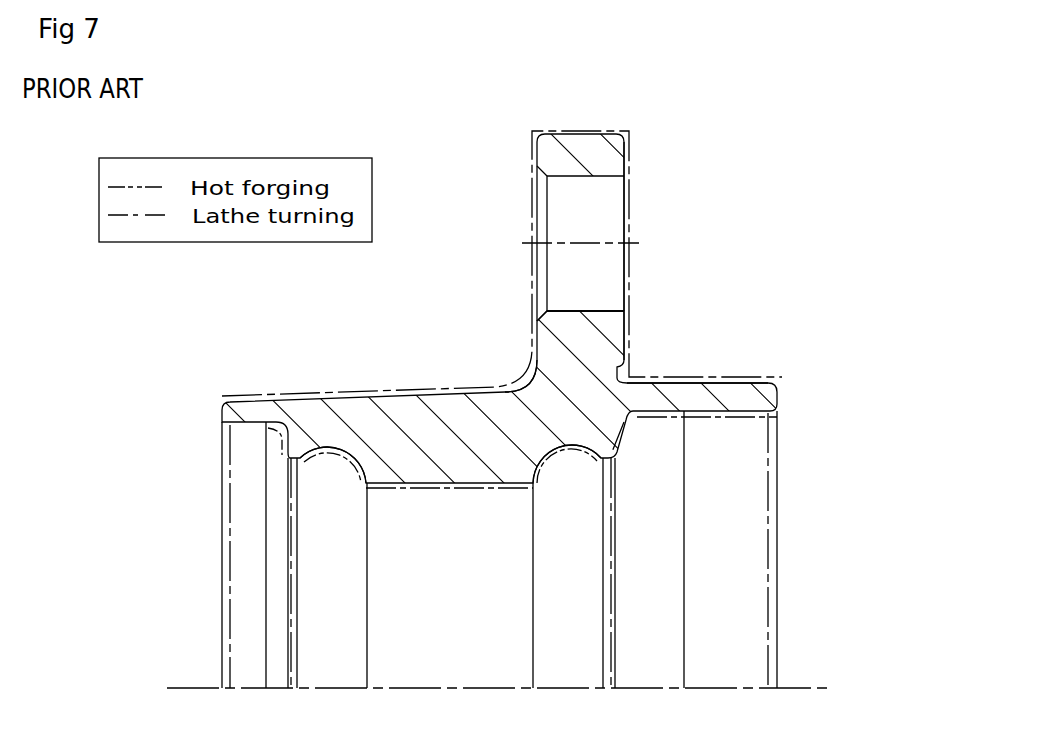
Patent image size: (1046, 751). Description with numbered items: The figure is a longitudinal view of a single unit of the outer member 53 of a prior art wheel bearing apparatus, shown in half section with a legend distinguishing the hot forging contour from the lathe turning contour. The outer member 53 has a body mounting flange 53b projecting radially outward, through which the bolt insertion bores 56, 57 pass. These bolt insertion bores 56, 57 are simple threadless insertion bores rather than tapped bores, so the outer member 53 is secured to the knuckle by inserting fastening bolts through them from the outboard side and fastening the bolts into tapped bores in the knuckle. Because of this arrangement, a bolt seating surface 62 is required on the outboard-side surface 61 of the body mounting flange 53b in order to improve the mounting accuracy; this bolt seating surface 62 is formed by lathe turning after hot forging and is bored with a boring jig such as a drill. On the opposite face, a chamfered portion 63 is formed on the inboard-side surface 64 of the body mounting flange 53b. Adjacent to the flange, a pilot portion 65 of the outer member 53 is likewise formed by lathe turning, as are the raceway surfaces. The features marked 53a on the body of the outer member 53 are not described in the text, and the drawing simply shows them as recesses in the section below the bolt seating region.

The outer member 53 is at (812, 258).
The annular groove 53a is at (347, 462).
The body mounting flange 53b is at (582, 136).
The bolt insertion bore 56 is at (614, 308).
The bolt insertion bore 57 is at (644, 303).
The outboard-side surface 61 is at (534, 224).
The bolt seating surface 62 is at (536, 333).
The chamfered portion 63 is at (532, 176).
The inboard-side surface 64 is at (630, 170).
The pilot portion 65 is at (686, 382).